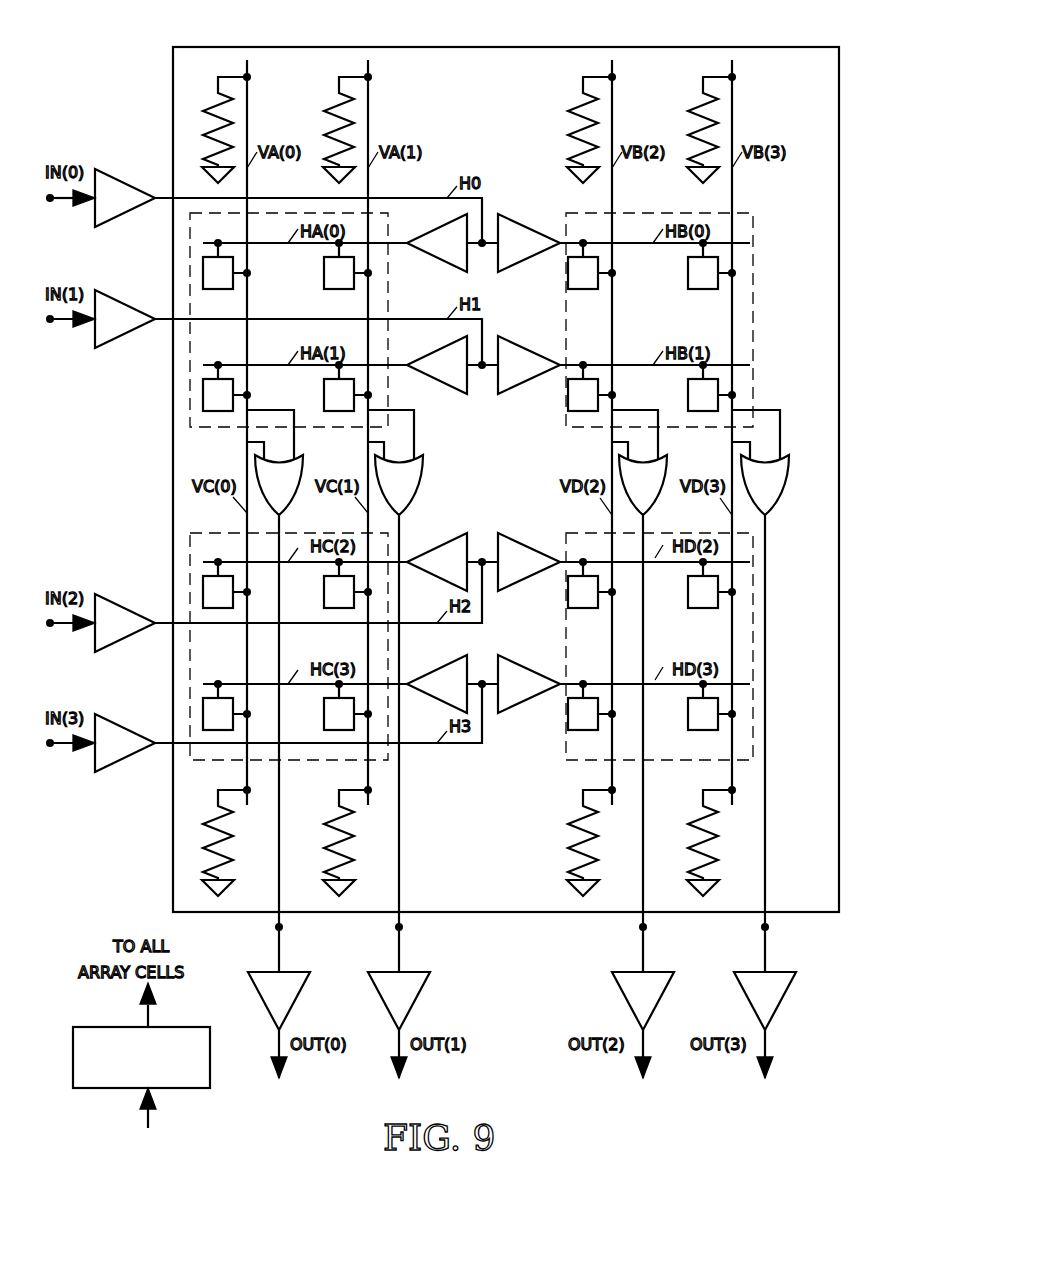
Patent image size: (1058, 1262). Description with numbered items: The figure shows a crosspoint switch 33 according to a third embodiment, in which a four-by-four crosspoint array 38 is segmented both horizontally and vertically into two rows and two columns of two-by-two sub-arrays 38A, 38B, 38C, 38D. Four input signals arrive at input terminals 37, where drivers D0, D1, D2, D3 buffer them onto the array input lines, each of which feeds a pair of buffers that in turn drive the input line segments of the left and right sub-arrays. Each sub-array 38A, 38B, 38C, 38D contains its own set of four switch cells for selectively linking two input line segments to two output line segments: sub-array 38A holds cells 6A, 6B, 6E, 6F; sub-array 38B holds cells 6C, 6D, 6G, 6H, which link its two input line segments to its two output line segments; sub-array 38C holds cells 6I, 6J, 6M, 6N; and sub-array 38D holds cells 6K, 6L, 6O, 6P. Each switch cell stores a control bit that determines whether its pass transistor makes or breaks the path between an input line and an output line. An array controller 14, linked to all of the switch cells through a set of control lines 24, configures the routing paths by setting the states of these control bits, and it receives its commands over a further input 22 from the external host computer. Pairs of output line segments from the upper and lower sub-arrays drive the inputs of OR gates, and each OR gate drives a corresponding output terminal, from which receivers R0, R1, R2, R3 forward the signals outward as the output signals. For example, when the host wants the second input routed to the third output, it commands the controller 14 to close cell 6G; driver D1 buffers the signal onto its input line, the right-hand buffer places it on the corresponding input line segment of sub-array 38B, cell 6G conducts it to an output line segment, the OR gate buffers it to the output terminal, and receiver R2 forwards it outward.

The crosspoint array 38 is at (672, 46).
The input terminals 37 is at (57, 205).
The sub-array 38A is at (218, 428).
The sub-array 38B is at (598, 428).
The sub-array 38C is at (218, 762).
The sub-array 38D is at (598, 762).
The control lines 24 is at (143, 1010).
The control input 22 is at (148, 1120).
The array controller 14 is at (141, 1057).
The crosspoint switch 33 is at (693, 1085).
The switch cell 6A is at (227, 264).
The switch cell 6B is at (348, 264).
The switch cell 6C is at (592, 264).
The switch cell 6D is at (712, 264).
The switch cell 6E is at (227, 386).
The switch cell 6F is at (348, 386).
The switch cell 6G is at (592, 386).
The switch cell 6H is at (712, 386).
The switch cell 6I is at (227, 583).
The switch cell 6J is at (348, 583).
The switch cell 6K is at (592, 583).
The switch cell 6L is at (712, 583).
The switch cell 6M is at (227, 705).
The switch cell 6N is at (348, 705).
The switch cell 6O is at (592, 705).
The switch cell 6P is at (712, 705).
The driver D0 is at (125, 198).
The driver D1 is at (125, 319).
The driver D2 is at (125, 623).
The driver D3 is at (125, 743).
The receiver R0 is at (279, 1025).
The receiver R1 is at (399, 1025).
The receiver R2 is at (643, 1025).
The receiver R3 is at (765, 1025).